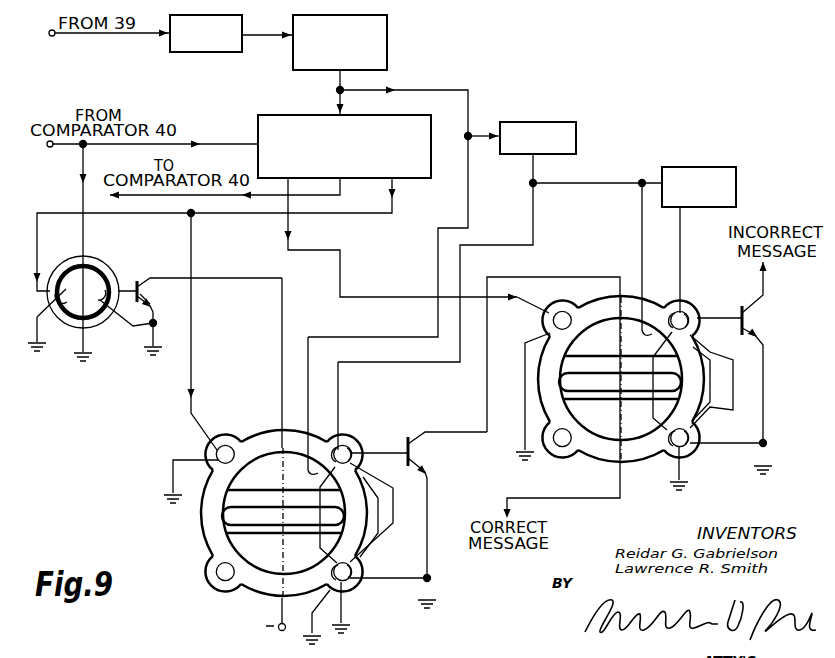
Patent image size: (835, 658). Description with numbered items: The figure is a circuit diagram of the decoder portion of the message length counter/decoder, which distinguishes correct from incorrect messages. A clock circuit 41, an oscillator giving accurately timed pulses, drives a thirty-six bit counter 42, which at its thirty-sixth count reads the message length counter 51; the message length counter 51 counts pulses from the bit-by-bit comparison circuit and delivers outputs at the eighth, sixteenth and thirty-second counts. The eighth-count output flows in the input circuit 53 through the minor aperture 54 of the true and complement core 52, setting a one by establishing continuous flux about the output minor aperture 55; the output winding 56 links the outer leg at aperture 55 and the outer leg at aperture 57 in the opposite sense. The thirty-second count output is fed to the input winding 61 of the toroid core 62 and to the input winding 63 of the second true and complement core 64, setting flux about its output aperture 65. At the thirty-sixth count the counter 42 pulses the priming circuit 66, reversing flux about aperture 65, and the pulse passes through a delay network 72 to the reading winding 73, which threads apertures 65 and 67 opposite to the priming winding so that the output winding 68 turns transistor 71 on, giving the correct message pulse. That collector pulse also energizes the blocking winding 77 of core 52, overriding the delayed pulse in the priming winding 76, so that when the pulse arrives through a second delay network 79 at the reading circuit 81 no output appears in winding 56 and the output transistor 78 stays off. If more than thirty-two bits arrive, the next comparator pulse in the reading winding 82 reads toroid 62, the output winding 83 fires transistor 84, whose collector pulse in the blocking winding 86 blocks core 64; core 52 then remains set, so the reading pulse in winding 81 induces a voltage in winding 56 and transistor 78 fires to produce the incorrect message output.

The clock circuit 41 is at (213, 14).
The thirty-six bit counter 42 is at (388, 23).
The message length counter 51 is at (315, 115).
The true and complement core 52 is at (598, 458).
The input circuit 53 is at (417, 295).
The minor aperture 54 is at (553, 320).
The output minor aperture 55 is at (681, 313).
The output winding 56 is at (733, 384).
The aperture 57 is at (692, 450).
The input winding 61 is at (37, 244).
The toroid core 62 is at (117, 277).
The input winding 63 is at (192, 412).
The true and complement core 64 is at (265, 589).
The output aperture 65 is at (342, 432).
The priming circuit 66 is at (310, 400).
The aperture 67 is at (350, 582).
The output winding 68 is at (393, 510).
The transistor 71 is at (413, 452).
The delay network 72 is at (555, 122).
The reading winding 73 is at (380, 534).
The priming winding 76 is at (641, 212).
The blocking winding 77 is at (590, 277).
The output transistor 78 is at (748, 323).
The delay network 79 is at (690, 167).
The reading circuit 81 is at (680, 233).
The reading winding 82 is at (84, 258).
The output winding 83 is at (137, 326).
The transistor 84 is at (143, 297).
The blocking winding 86 is at (282, 418).